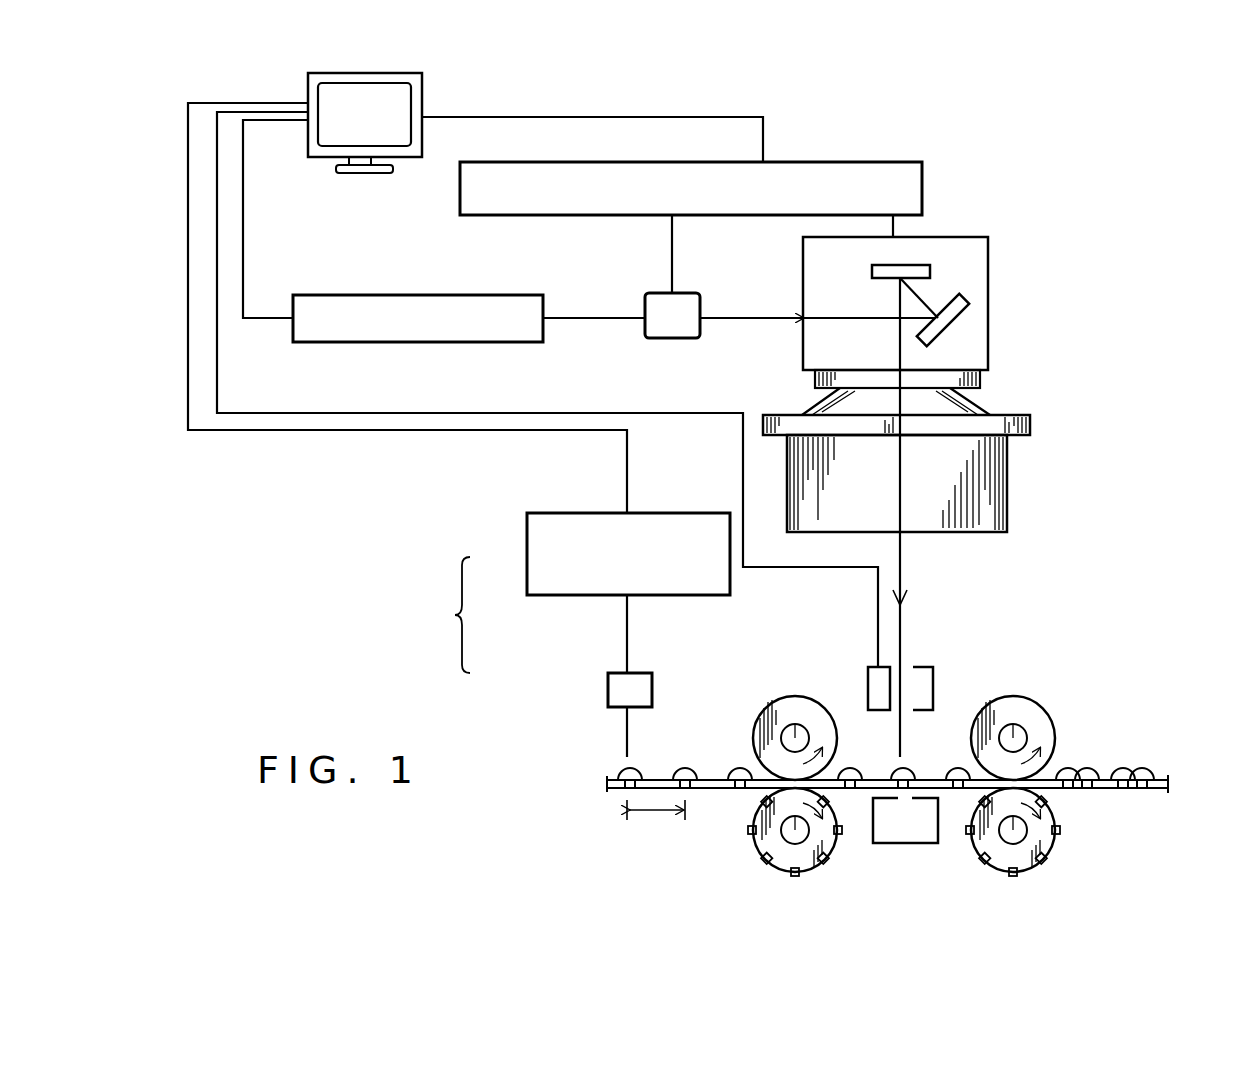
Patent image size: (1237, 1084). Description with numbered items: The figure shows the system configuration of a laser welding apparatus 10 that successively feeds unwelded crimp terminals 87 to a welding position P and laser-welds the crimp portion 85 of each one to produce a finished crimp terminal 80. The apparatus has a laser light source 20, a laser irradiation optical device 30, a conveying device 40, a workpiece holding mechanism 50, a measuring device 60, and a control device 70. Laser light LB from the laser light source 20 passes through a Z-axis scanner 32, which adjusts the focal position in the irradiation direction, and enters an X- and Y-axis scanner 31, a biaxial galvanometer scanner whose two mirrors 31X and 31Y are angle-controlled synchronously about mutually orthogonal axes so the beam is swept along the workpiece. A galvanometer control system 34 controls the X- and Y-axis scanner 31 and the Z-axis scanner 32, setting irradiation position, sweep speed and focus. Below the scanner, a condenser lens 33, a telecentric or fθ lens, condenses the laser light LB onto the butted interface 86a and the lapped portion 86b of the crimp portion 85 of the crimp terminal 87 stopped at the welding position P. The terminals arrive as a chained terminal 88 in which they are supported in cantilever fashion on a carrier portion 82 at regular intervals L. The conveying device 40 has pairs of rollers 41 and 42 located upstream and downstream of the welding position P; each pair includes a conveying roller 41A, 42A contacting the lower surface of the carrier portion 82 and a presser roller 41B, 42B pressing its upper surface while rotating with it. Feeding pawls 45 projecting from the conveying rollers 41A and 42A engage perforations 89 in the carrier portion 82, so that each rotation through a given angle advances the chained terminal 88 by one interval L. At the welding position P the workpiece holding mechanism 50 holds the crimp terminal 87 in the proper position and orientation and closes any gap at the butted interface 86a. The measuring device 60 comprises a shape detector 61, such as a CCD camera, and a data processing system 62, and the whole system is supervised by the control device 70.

The laser welding apparatus 10 is at (957, 150).
The laser light source 20 is at (400, 295).
The laser irradiation optical device 30 is at (935, 273).
The X- and Y-axis scanner 31 is at (960, 237).
The mirror 31X is at (965, 300).
The mirror 31Y is at (872, 269).
The Z-axis scanner 32 is at (686, 293).
The condenser lens 33 is at (1007, 462).
The galvanometer control system 34 is at (785, 162).
The conveying device 40 is at (933, 752).
The pair of rollers 41 is at (782, 752).
The conveying roller 41A is at (780, 872).
The presser roller 41B is at (792, 697).
The pair of rollers 42 is at (1030, 783).
The conveying roller 42A is at (1030, 866).
The presser roller 42B is at (1012, 697).
The feeding pawls 45 is at (830, 866).
The workpiece holding mechanism 50 is at (860, 688).
The measuring device 60 is at (578, 610).
The shape detector 61 is at (608, 690).
The data processing system 62 is at (527, 560).
The control device 70 is at (428, 106).
The crimp terminal 80 is at (1142, 788).
The carrier portion 82 is at (1150, 776).
The crimp portion 85 is at (916, 761).
The butted interface 86a is at (740, 768).
The lapped portion 86b is at (958, 768).
The unwelded crimp terminal 87 is at (686, 768).
The chained terminal 88 is at (598, 785).
The perforations 89 is at (740, 790).
The interval L is at (656, 822).
The laser light LB is at (900, 565).
The welding position P is at (914, 758).